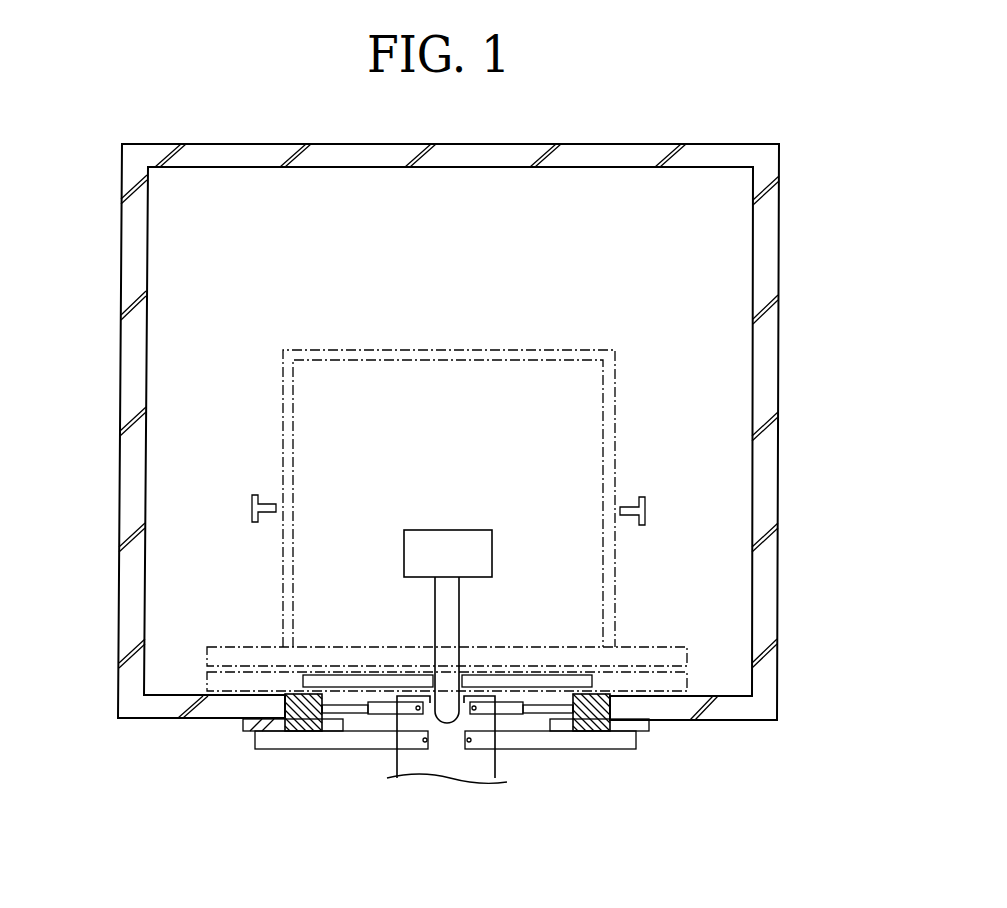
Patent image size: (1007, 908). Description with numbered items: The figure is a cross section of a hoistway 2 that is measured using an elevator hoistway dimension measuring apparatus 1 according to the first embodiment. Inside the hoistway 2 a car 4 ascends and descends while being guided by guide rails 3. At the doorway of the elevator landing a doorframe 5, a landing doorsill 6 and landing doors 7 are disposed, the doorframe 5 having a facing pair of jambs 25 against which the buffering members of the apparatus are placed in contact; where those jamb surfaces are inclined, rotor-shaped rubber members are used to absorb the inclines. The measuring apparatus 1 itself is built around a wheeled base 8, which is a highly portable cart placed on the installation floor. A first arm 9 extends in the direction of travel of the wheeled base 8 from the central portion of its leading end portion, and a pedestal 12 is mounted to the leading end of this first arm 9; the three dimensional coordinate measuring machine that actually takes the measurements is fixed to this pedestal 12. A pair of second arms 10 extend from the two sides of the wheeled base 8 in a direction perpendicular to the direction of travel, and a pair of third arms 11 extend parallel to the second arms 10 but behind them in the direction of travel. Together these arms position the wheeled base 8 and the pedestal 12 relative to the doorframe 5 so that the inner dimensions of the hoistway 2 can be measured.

The elevator hoistway dimension measuring apparatus 1 is at (383, 552).
The hoistway 2 is at (235, 603).
The guide rails 3 is at (645, 503).
The car 4 is at (580, 392).
The doorframe 5 is at (652, 727).
The landing doorsill 6 is at (687, 682).
The landing doors 7 is at (568, 683).
The wheeled base 8 is at (467, 762).
The first arm 9 is at (433, 608).
The second arms 10 is at (387, 710).
The third arms 11 is at (610, 750).
The pedestal 12 is at (425, 542).
The jambs 25 is at (323, 705).